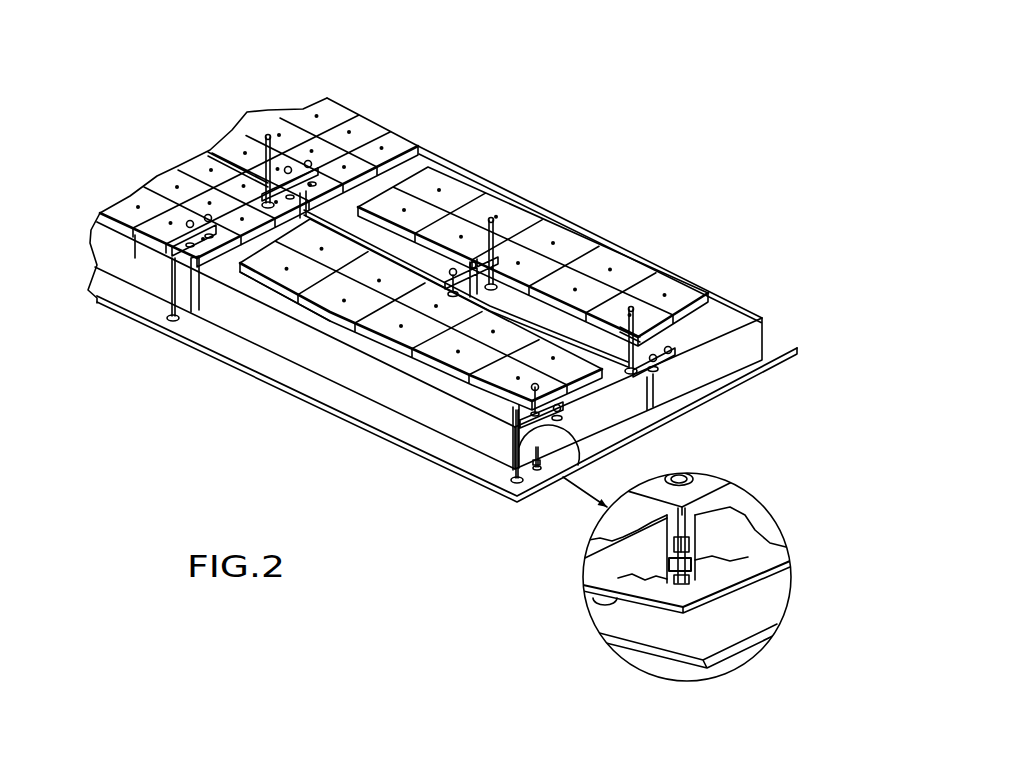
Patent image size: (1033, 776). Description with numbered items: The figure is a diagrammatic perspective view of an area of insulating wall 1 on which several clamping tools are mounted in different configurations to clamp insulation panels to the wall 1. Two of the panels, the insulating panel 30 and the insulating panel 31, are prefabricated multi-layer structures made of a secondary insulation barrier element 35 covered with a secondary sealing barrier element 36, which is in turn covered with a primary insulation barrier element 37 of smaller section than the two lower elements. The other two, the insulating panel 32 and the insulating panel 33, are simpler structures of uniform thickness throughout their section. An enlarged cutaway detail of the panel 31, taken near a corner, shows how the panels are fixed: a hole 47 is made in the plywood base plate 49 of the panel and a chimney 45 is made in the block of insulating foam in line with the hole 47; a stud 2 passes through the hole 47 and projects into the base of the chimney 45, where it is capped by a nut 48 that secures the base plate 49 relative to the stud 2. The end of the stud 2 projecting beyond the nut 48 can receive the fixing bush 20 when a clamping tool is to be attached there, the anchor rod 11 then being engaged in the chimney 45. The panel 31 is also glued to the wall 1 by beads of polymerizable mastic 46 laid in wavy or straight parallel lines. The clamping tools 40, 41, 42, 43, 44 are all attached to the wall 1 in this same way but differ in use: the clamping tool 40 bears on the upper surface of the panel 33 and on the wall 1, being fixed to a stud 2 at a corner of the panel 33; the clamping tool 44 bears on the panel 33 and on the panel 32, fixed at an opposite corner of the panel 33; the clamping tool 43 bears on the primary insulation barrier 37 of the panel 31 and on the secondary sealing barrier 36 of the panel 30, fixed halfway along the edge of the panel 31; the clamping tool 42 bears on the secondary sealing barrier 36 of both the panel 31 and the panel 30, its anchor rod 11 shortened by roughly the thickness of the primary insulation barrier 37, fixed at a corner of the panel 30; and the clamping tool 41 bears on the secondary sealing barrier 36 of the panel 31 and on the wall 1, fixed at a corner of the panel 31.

The wall 1 is at (266, 382).
The stud 2 is at (586, 582).
The anchor rod 11 is at (690, 512).
The fixing bush 20 is at (692, 537).
The insulating panel 30 is at (739, 301).
The insulating panel 31 is at (407, 373).
The insulating panel 32 is at (380, 113).
The insulating panel 33 is at (125, 238).
The secondary insulation barrier element 35 is at (213, 305).
The secondary sealing barrier element 36 is at (262, 296).
The primary insulation barrier element 37 is at (345, 316).
The clamping tool 40 is at (167, 278).
The clamping tool 41 is at (510, 437).
The clamping tool 42 is at (680, 358).
The clamping tool 43 is at (505, 263).
The clamping tool 44 is at (291, 165).
The chimney 45 is at (694, 476).
The beads of polymerizable mastic 46 is at (596, 599).
The hole 47 is at (688, 585).
The nut 48 is at (692, 566).
The plywood base plate 49 is at (702, 592).